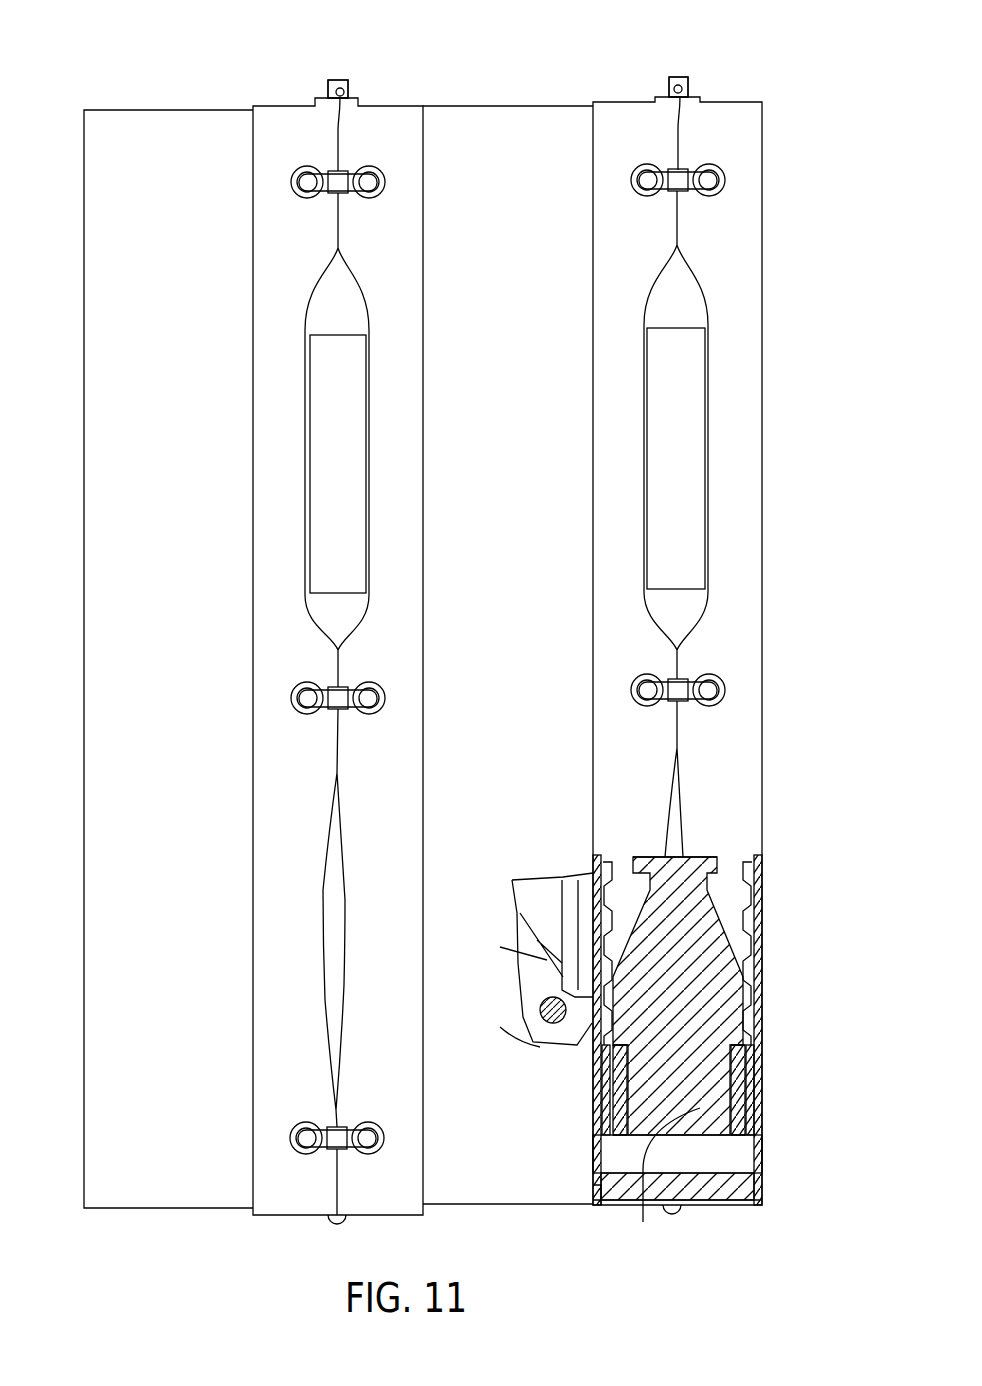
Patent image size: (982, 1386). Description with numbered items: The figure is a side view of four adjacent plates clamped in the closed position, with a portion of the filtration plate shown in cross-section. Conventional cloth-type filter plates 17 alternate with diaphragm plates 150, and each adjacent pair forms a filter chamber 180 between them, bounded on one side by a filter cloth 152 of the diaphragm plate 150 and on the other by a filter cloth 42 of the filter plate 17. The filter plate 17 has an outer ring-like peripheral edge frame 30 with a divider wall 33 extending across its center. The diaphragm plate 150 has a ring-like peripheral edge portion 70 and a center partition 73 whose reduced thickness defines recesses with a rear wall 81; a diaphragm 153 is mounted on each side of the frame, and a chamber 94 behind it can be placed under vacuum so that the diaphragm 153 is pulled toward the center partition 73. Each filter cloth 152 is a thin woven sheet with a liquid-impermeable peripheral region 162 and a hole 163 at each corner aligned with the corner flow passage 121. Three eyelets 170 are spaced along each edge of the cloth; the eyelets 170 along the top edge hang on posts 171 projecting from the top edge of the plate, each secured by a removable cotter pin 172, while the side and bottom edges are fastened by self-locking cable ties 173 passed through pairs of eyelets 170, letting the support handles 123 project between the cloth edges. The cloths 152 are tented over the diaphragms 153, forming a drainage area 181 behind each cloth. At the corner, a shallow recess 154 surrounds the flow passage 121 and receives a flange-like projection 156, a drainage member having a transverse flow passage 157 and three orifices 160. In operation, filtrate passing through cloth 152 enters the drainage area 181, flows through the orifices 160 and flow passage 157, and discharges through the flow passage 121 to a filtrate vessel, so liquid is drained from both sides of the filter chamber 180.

The filter plate 17 is at (148, 107).
The filter cloth 152 is at (615, 108).
The diaphragm plate 150 is at (366, 70).
The post 171 is at (334, 84).
The cotter pin 172 is at (344, 92).
The eyelet 170 is at (296, 174).
The cable tie 173 is at (700, 170).
The support handle 123 is at (320, 405).
The rear wall 81 is at (617, 872).
The filter chamber 180 is at (592, 862).
The center partition 73 is at (700, 858).
The diaphragm 153 is at (756, 863).
The drainage area 181 is at (763, 977).
The orifice 160 is at (765, 1032).
The peripheral region 162 is at (748, 1110).
The flow passage 121 is at (715, 1170).
The peripheral edge portion 70 is at (738, 1195).
The projection 156 is at (643, 1222).
The hole 163 is at (593, 1185).
The flow passage 157 is at (593, 1165).
The recess 154 is at (620, 1120).
The chamber 94 is at (570, 898).
The divider wall 33 is at (532, 890).
The filter cloth 42 is at (562, 935).
The peripheral edge frame 30 is at (520, 1035).